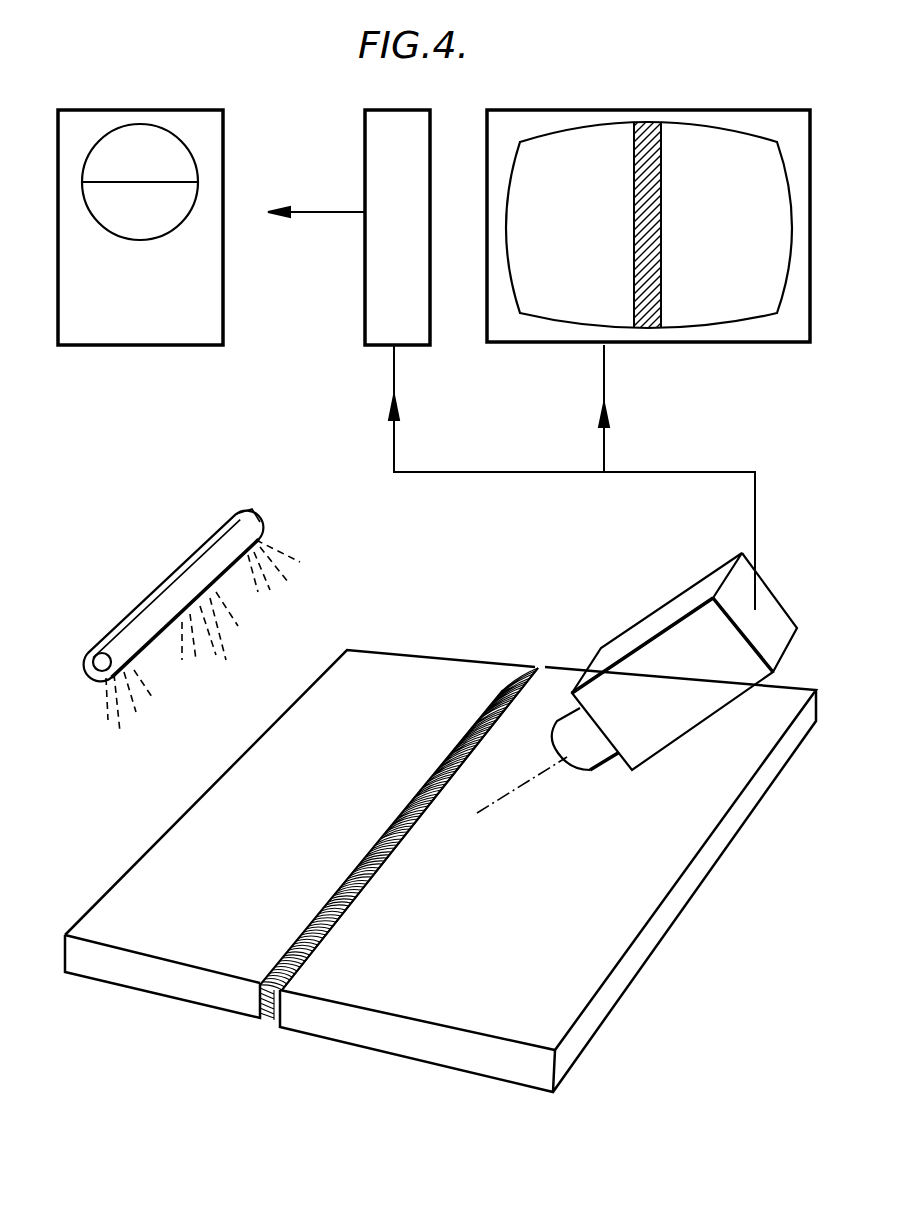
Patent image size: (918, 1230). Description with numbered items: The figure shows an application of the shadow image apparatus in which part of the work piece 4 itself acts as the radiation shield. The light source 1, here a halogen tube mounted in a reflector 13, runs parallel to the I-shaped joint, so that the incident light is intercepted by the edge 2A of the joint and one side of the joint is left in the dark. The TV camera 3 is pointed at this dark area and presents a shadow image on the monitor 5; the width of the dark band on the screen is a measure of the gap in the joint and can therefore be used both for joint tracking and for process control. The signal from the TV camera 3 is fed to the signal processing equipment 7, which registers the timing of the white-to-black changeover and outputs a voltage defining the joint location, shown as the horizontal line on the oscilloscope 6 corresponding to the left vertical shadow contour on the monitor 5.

The light source 1 is at (222, 557).
The edge of the joint 2A is at (377, 843).
The TV camera 3 is at (770, 613).
The work piece 4 is at (500, 697).
The monitor 5 is at (522, 125).
The oscilloscope 6 is at (163, 122).
The signal processing equipment 7 is at (383, 122).
The reflector 13 is at (198, 557).